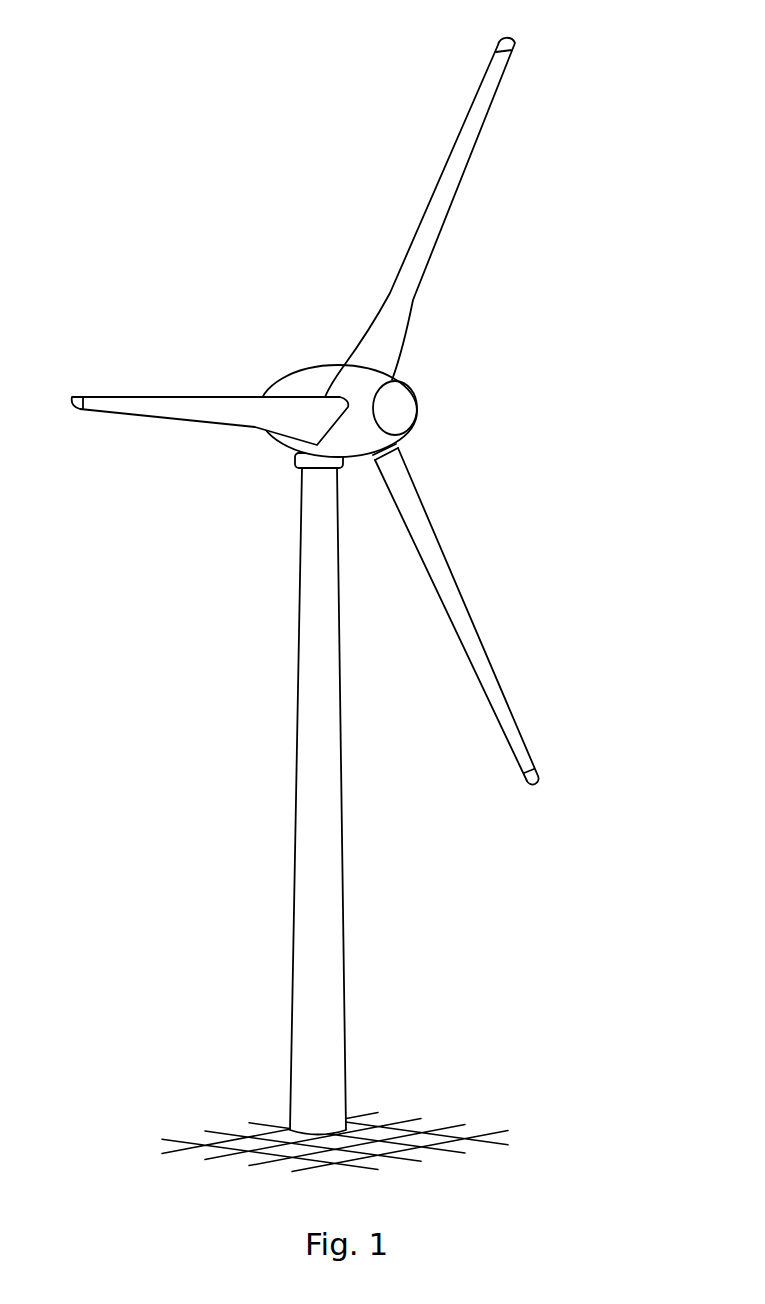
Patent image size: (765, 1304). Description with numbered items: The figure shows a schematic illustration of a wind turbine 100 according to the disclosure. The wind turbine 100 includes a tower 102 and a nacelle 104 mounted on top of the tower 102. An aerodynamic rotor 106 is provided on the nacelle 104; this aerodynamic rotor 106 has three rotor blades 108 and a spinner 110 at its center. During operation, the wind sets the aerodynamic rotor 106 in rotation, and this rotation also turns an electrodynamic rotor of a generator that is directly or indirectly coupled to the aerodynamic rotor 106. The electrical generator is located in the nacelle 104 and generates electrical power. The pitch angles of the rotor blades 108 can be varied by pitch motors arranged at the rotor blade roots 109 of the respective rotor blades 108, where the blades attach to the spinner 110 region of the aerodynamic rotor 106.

The wind turbine 100 is at (257, 535).
The tower 102 is at (332, 875).
The nacelle 104 is at (315, 388).
The aerodynamic rotor 106 is at (483, 333).
The rotor blades 108 is at (455, 170).
The rotor blade roots 109 is at (397, 447).
The spinner 110 is at (400, 408).